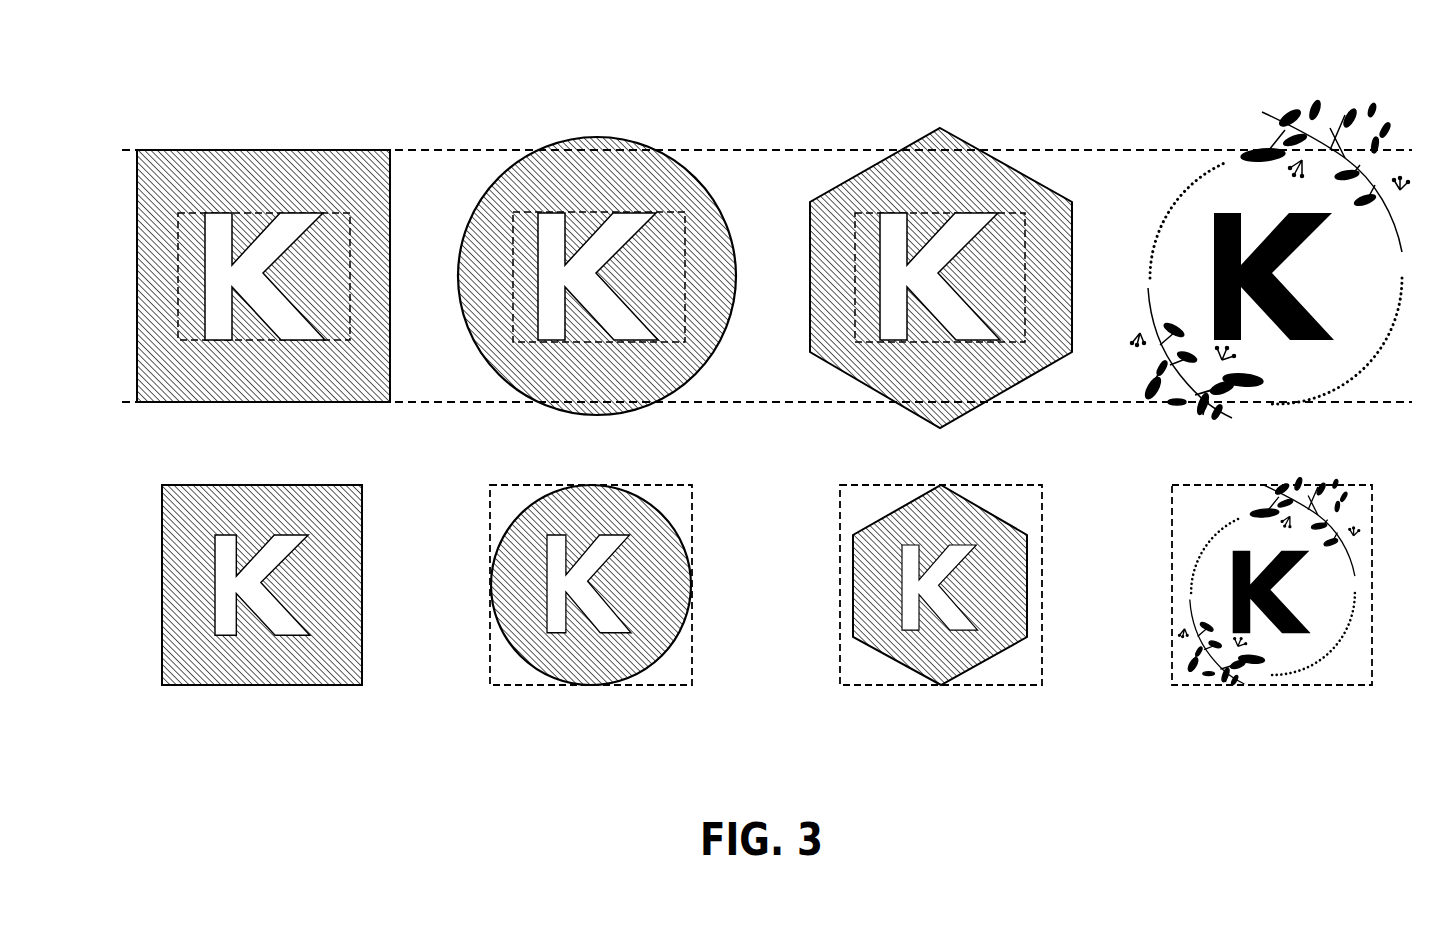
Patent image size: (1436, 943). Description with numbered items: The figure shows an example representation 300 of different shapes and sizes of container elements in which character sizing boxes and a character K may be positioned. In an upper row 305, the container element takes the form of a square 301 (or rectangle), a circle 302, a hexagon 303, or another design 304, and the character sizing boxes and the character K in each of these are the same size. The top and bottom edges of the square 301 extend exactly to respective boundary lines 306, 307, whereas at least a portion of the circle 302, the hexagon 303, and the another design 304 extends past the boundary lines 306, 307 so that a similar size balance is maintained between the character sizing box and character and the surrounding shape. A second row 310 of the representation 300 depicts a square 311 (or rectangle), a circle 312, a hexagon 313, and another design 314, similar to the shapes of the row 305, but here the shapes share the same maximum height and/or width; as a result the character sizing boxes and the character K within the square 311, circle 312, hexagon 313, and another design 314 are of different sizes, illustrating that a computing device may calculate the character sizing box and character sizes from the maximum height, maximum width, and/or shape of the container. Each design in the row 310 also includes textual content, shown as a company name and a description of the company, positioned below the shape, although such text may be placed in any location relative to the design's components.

The representation 300 is at (762, 70).
The square 301 is at (257, 148).
The circle 302 is at (608, 138).
The hexagon 303 is at (942, 128).
The another design 304 is at (1360, 117).
The row 305 is at (113, 278).
The boundary line 306 is at (450, 150).
The boundary line 307 is at (443, 402).
The row 310 is at (113, 578).
The square 311 is at (162, 668).
The circle 312 is at (488, 667).
The hexagon 313 is at (840, 660).
The another design 314 is at (1172, 658).